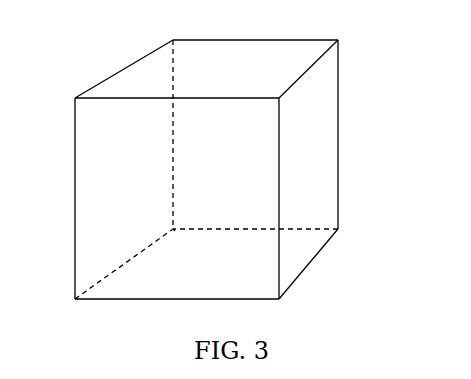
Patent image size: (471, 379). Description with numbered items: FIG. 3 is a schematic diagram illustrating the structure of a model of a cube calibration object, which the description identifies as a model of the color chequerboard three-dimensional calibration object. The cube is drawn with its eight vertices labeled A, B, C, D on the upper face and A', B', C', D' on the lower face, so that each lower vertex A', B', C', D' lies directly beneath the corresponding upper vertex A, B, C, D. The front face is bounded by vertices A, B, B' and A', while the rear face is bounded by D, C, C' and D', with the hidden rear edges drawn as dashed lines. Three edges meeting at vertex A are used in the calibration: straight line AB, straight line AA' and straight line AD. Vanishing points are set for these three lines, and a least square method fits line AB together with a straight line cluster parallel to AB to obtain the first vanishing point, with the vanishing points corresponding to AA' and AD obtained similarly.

The cube vertex A is at (163, 169).
The cube vertex B is at (308, 169).
The cube vertex C is at (266, 128).
The cube vertex D is at (158, 128).
The cube vertex A' is at (159, 270).
The cube vertex B' is at (308, 270).
The cube vertex C' is at (269, 228).
The cube vertex D' is at (160, 226).